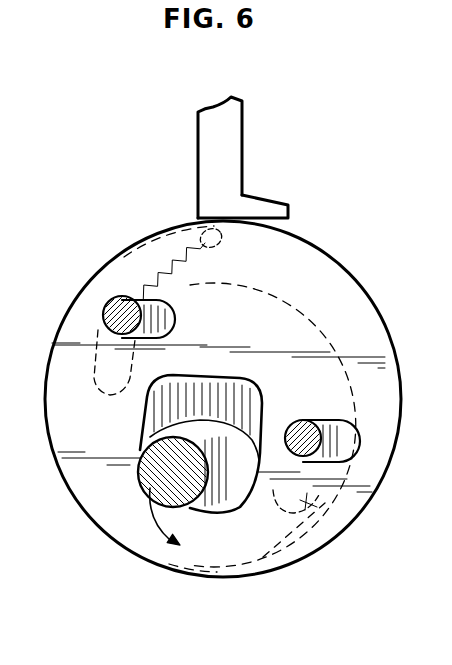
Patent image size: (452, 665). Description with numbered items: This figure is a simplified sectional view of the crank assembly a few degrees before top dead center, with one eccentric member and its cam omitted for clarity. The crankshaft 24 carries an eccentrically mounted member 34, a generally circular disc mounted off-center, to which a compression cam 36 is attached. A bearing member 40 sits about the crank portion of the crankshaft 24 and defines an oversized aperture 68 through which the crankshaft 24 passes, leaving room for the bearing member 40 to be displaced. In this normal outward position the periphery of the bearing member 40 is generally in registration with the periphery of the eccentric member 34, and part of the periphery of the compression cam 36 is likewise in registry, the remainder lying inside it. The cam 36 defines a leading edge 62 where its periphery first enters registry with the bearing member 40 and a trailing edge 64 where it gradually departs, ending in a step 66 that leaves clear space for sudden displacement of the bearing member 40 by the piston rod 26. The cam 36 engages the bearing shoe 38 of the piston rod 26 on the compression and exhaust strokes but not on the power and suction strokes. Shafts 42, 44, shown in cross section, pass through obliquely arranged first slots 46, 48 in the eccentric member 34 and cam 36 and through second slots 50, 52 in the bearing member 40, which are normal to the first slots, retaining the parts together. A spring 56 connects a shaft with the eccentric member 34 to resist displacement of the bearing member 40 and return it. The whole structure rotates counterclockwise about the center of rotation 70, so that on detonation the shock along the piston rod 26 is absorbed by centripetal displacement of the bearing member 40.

The crankshaft 24 is at (150, 487).
The piston rod 26 is at (230, 122).
The eccentrically mounted member 34 is at (338, 281).
The compression cam 36 is at (152, 252).
The bearing shoe 38 is at (260, 203).
The bearing member 40 is at (92, 485).
The shaft 42 is at (112, 312).
The shaft 44 is at (313, 424).
The first slot 46 is at (127, 363).
The first slot 48 is at (348, 505).
The second slot 50 is at (163, 318).
The second slot 52 is at (343, 443).
The spring 56 is at (185, 268).
The leading edge 62 is at (137, 557).
The trailing edge 64 is at (123, 253).
The step 66 is at (178, 232).
The oversized aperture 68 is at (167, 405).
The center of rotation 70 is at (216, 478).